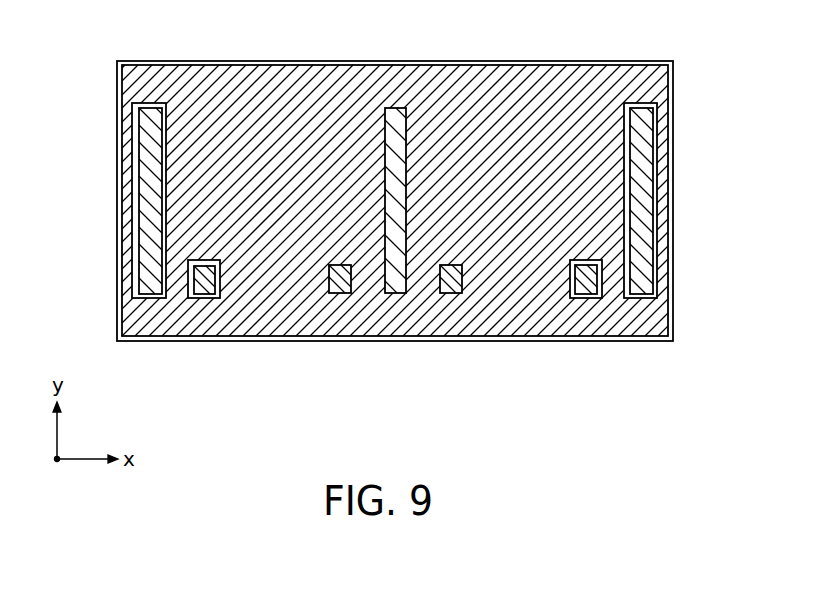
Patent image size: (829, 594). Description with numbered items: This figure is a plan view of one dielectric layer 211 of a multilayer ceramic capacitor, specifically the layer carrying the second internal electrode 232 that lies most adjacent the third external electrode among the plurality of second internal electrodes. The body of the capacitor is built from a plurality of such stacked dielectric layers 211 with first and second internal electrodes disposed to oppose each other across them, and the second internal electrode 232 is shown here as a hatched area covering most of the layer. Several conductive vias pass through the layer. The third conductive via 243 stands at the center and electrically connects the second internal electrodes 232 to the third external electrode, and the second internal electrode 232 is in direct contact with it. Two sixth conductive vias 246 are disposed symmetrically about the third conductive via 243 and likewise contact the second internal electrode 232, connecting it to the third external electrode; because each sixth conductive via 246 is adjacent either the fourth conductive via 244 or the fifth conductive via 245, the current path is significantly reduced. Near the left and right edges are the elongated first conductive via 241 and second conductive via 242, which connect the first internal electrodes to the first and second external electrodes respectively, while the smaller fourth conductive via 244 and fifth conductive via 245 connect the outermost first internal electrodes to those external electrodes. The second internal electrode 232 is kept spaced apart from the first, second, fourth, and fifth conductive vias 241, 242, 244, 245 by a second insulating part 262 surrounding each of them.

The dielectric layer 211 is at (629, 65).
The second internal electrode 232 is at (533, 78).
The first conductive via 241 is at (153, 288).
The second conductive via 242 is at (645, 284).
The third conductive via 243 is at (400, 290).
The fourth conductive via 244 is at (200, 275).
The fifth conductive via 245 is at (588, 284).
The sixth conductive via 246 is at (345, 292).
The second insulating part 262 is at (134, 281).